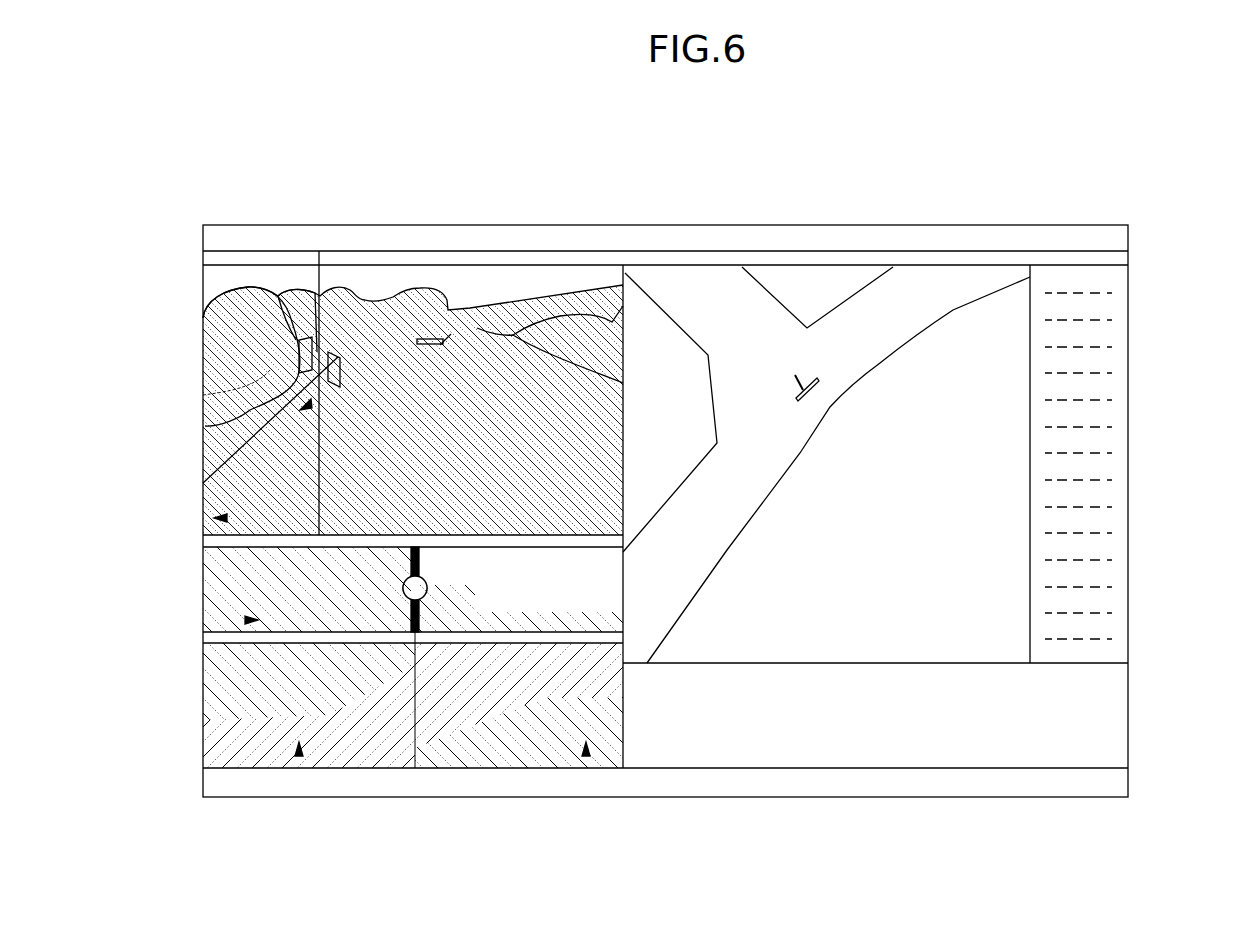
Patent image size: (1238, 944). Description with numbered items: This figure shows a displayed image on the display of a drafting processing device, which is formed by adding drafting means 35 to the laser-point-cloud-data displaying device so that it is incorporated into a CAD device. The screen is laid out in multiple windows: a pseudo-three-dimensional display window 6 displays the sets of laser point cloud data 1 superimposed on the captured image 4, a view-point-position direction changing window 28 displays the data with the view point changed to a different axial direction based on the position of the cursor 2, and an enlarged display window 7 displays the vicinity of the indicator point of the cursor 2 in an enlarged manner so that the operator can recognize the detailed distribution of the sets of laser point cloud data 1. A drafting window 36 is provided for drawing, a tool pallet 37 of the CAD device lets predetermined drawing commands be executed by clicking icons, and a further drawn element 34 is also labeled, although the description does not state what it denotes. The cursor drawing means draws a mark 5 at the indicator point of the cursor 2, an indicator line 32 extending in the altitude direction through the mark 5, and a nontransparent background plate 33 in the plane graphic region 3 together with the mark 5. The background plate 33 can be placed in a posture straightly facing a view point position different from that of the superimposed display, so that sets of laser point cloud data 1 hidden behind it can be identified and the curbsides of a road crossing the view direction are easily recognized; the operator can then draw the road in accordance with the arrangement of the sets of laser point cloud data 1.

The sets of laser point cloud data 1 is at (215, 518).
The cursor 2 is at (258, 406).
The plane graphic region 3 is at (297, 352).
The captured image 4 is at (530, 290).
The mark 5 is at (299, 356).
The pseudo-three-dimensional display window 6 is at (578, 280).
The enlarged display window 7 is at (204, 606).
The view-point-position direction changing window 28 is at (203, 753).
The indicator line 32 is at (322, 292).
The background plate 33 is at (335, 355).
The guide bar 34 is at (248, 482).
The drafting means 35 is at (443, 342).
The drafting window 36 is at (945, 275).
The tool pallet 37 is at (1130, 293).